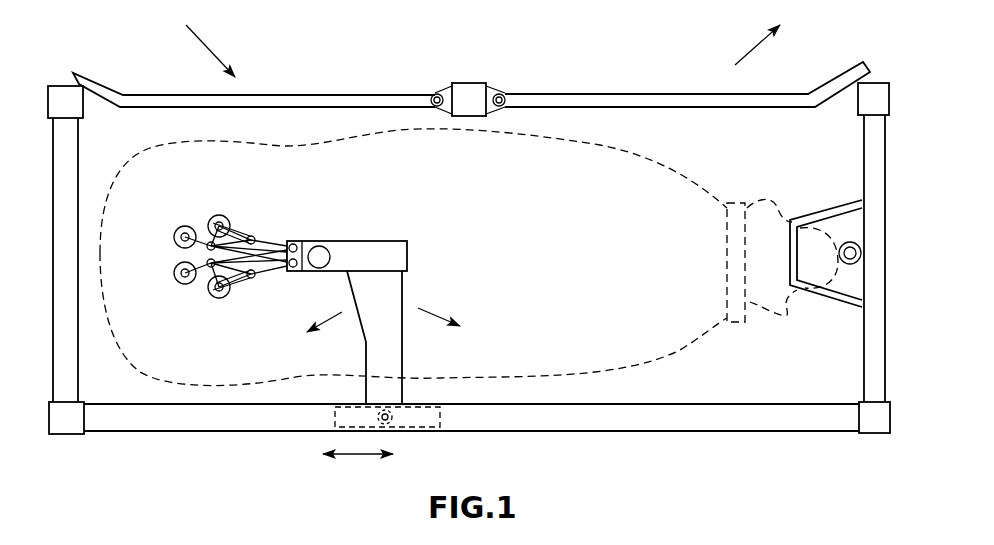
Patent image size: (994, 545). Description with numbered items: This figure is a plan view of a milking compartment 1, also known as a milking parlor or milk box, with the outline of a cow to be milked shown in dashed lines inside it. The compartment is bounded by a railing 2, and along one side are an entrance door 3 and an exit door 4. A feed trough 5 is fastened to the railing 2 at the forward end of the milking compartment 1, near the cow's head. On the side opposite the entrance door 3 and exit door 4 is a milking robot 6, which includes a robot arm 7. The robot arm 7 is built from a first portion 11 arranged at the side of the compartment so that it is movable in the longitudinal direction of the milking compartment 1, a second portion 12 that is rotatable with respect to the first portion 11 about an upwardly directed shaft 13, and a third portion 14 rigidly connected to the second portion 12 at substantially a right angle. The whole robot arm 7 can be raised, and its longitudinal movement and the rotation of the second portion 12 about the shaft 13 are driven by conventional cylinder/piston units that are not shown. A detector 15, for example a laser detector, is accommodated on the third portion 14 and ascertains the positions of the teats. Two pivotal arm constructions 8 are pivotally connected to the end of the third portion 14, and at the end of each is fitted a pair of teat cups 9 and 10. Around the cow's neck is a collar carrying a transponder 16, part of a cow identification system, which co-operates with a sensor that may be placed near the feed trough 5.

The milking compartment 1 is at (267, 435).
The railing 2 is at (197, 423).
The entrance door 3 is at (308, 100).
The exit door 4 is at (640, 97).
The feed trough 5 is at (825, 208).
The milking robot 6 is at (325, 360).
The robot arm 7 is at (312, 315).
The pivotal arm constructions 8 is at (261, 228).
The teat cups 9 is at (175, 272).
The teat cups 10 is at (219, 216).
The first portion 11 is at (440, 420).
The second portion 12 is at (394, 358).
The shaft 13 is at (390, 422).
The third portion 14 is at (378, 243).
The detector 15 is at (321, 247).
The transponder 16 is at (725, 258).